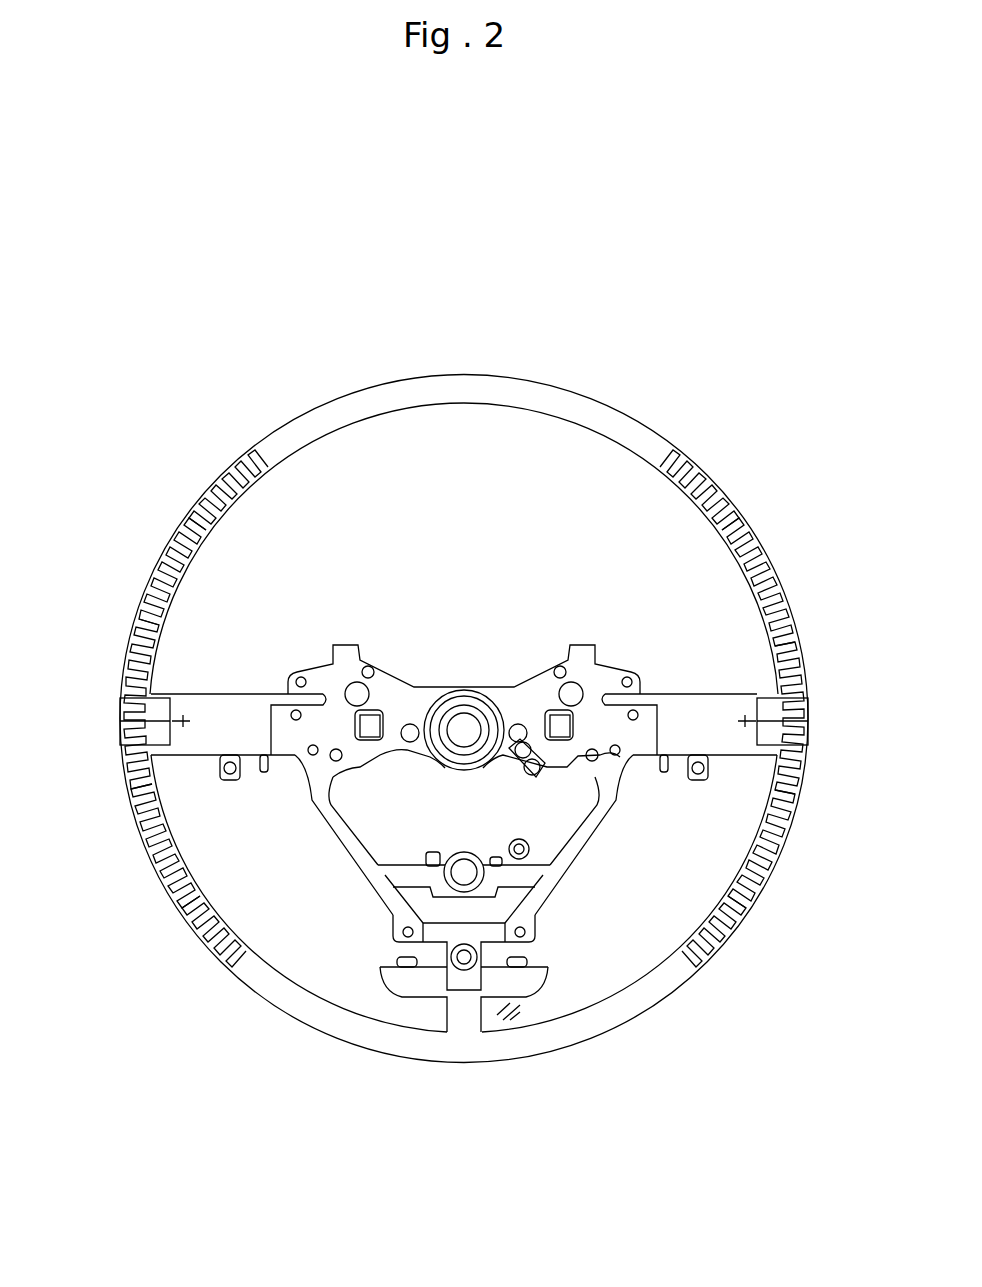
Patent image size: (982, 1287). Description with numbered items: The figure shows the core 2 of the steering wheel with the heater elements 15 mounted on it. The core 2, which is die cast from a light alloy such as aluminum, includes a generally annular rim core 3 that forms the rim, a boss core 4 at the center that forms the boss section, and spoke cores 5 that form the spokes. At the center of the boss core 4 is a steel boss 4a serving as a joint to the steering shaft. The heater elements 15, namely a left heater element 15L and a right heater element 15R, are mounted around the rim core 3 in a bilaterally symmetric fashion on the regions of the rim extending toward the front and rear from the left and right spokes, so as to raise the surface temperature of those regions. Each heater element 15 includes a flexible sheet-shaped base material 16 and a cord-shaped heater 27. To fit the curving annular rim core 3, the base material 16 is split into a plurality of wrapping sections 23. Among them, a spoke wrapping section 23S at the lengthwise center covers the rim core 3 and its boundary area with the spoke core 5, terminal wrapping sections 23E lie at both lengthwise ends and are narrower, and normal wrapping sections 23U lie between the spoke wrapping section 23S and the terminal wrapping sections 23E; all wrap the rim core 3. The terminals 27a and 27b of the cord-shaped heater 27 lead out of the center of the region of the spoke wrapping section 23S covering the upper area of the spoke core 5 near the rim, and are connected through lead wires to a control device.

The core 2 is at (639, 395).
The rim core 3 is at (467, 390).
The boss core 4 is at (472, 668).
The boss 4a is at (457, 712).
The spoke core 5 is at (236, 688).
The heater element 15 is at (459, 717).
The left heater element 15L is at (127, 598).
The right heater element 15R is at (783, 562).
The base material 16 is at (207, 875).
The wrapping section 23 is at (465, 753).
The terminal wrapping section 23E is at (237, 497).
The spoke wrapping section 23S is at (117, 722).
The normal wrapping section 23U is at (805, 660).
The cord-shaped heater 27 is at (753, 907).
The terminal of cord-shaped heater 27a is at (186, 694).
The terminal of cord-shaped heater 27b is at (186, 745).